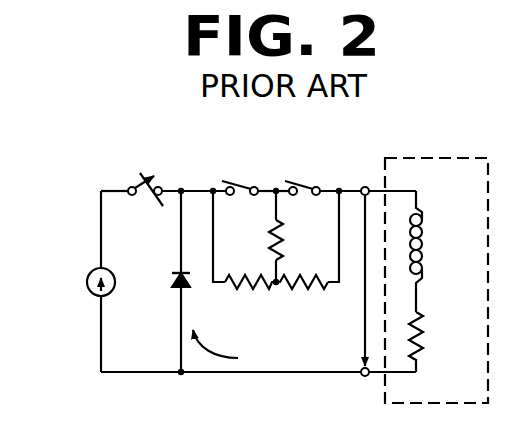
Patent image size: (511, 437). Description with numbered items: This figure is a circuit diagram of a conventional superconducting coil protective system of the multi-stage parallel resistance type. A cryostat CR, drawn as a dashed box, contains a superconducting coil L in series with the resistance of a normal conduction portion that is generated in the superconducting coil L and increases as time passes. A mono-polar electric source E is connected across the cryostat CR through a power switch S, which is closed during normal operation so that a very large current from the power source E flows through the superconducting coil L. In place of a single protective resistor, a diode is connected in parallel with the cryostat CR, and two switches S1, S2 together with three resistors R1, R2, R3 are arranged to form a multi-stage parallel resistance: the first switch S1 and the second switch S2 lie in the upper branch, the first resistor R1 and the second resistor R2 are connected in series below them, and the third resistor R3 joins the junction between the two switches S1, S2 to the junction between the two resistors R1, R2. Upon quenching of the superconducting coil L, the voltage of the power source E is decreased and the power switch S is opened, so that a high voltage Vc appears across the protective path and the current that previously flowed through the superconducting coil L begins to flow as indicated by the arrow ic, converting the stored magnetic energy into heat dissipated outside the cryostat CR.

The mono-polar electric source E is at (87, 282).
The power switch S is at (145, 176).
The switch S1 is at (240, 172).
The switch S2 is at (302, 172).
The resistor R1 is at (250, 299).
The resistor R2 is at (302, 299).
The resistor R3 is at (294, 240).
The high voltage Vc is at (350, 281).
The electric current ic is at (213, 331).
The cryostat CR is at (416, 158).
The superconducting coil L is at (426, 251).